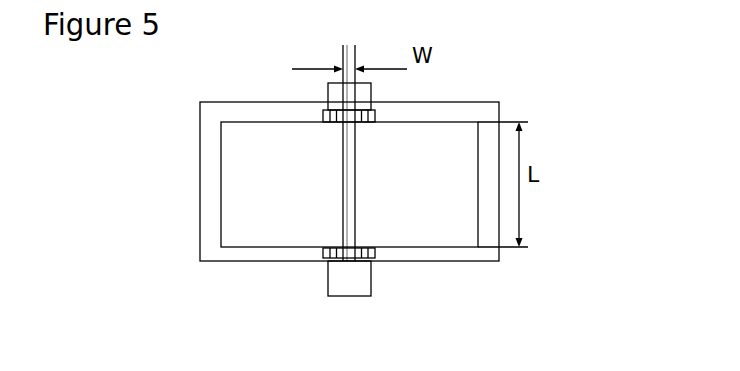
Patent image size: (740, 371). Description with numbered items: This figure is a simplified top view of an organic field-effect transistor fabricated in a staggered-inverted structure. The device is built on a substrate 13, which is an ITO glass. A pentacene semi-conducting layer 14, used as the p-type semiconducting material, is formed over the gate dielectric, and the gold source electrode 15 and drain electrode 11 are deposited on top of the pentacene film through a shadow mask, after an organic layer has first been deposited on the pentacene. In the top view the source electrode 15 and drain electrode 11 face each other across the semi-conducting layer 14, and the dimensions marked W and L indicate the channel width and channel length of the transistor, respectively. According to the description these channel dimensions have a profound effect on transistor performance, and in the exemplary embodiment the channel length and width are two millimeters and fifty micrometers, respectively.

The drain electrode 11 is at (420, 208).
The substrate 13 is at (440, 261).
The semi-conducting layer 14 is at (323, 258).
The source electrode 15 is at (265, 209).